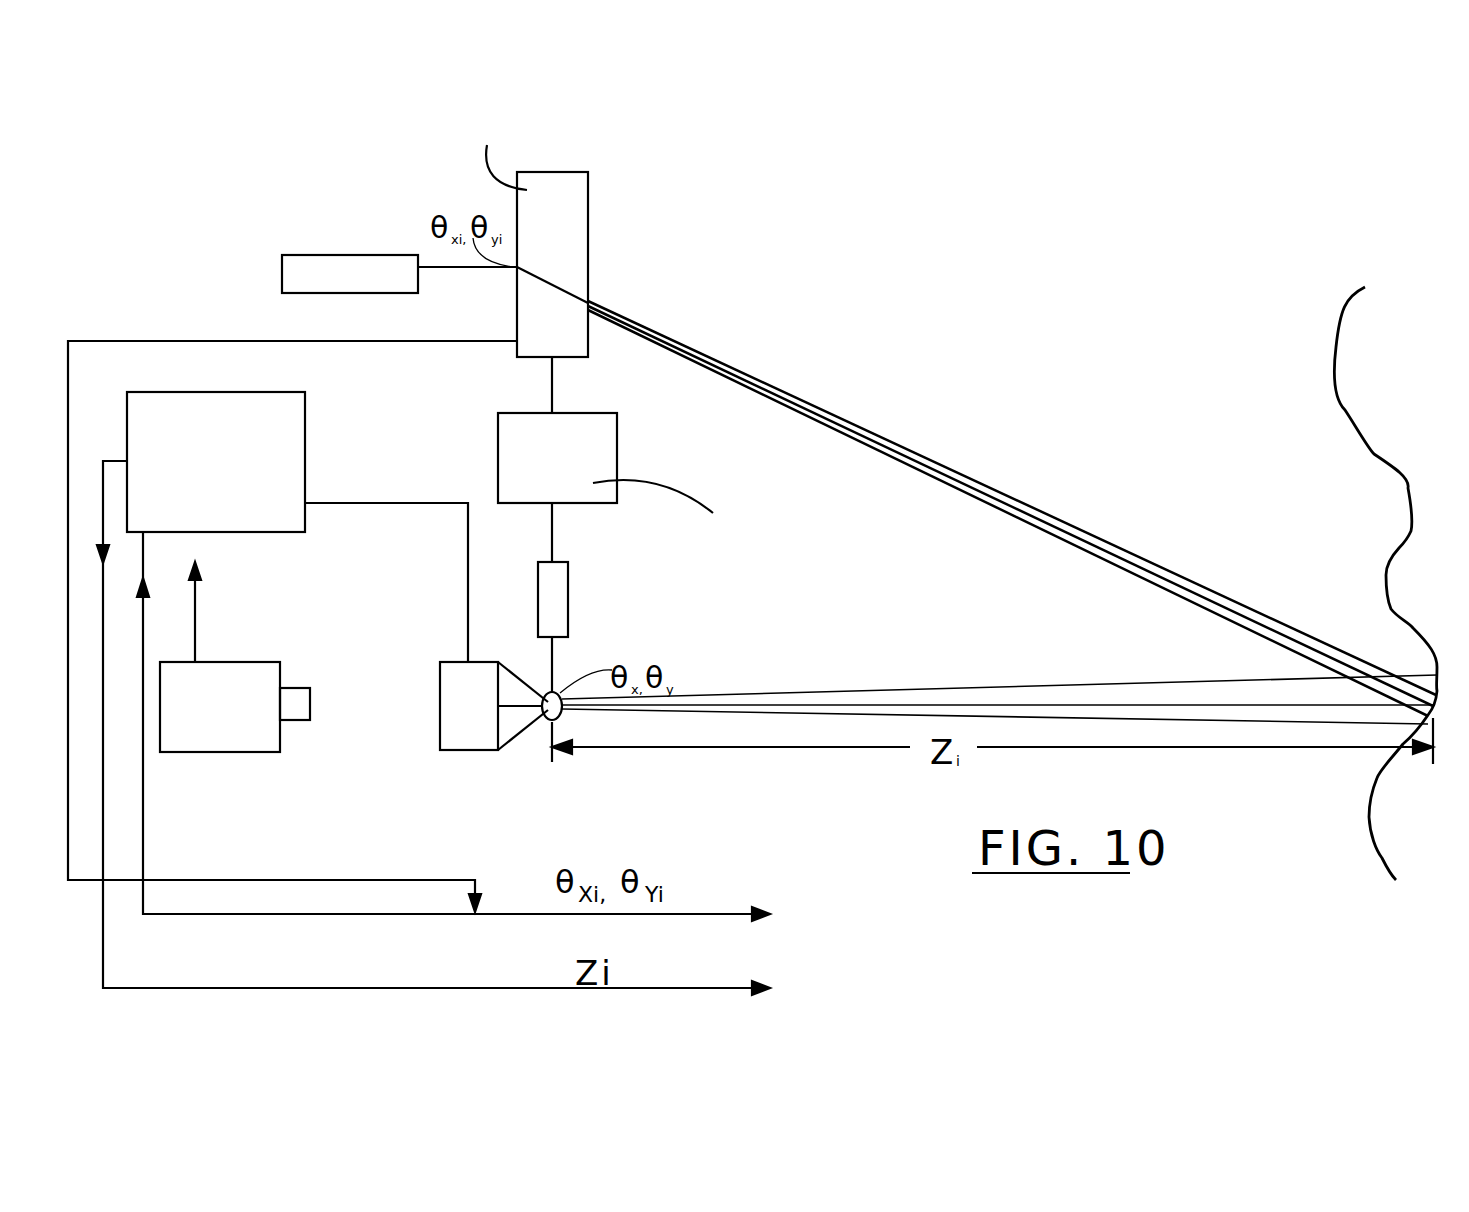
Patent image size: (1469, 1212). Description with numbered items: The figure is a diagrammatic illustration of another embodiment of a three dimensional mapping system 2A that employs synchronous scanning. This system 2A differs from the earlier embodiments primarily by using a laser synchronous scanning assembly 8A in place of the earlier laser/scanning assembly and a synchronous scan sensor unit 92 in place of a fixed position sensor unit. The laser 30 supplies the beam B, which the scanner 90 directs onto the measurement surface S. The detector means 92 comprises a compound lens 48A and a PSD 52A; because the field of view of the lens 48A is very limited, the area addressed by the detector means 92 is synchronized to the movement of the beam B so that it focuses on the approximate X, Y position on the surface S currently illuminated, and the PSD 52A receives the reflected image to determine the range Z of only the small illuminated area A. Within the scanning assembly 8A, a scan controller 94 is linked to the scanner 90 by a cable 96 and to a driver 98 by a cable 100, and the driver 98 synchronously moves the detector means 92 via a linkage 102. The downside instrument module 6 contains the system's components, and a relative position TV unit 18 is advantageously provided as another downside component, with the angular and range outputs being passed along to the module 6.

The 3-D mapping system 2A is at (318, 366).
The downside instrument module 6 is at (318, 427).
The laser synchronous scanning assembly 8A is at (547, 239).
The relative position TV unit 18 is at (236, 732).
The laser 30 is at (320, 265).
The compound lens 48A is at (563, 713).
The PSD 52A is at (458, 717).
The scanner 90 is at (575, 210).
The synchronous scan sensor unit 92 is at (512, 755).
The scan controller 94 is at (602, 452).
The cable 96 is at (552, 390).
The driver 98 is at (548, 583).
The cable 100 is at (557, 543).
The linkage 102 is at (553, 657).
The beam B is at (788, 392).
The measurement surface S is at (1401, 493).
The illuminated area A is at (1432, 700).